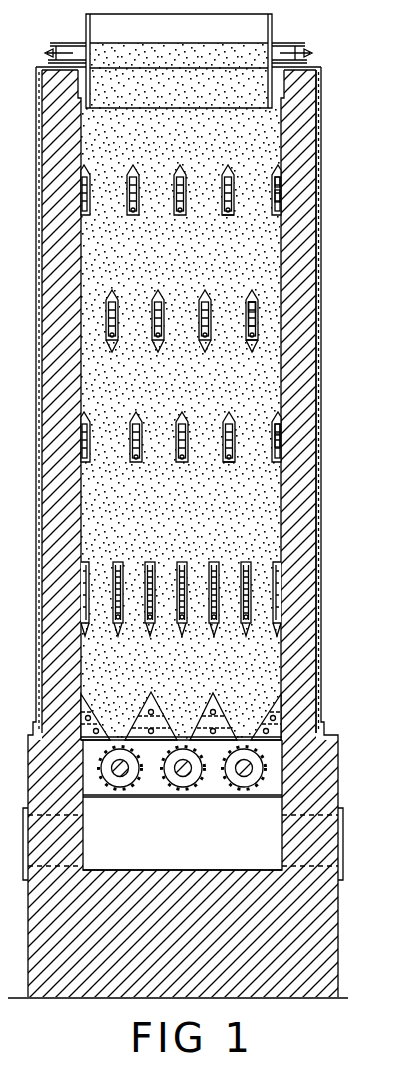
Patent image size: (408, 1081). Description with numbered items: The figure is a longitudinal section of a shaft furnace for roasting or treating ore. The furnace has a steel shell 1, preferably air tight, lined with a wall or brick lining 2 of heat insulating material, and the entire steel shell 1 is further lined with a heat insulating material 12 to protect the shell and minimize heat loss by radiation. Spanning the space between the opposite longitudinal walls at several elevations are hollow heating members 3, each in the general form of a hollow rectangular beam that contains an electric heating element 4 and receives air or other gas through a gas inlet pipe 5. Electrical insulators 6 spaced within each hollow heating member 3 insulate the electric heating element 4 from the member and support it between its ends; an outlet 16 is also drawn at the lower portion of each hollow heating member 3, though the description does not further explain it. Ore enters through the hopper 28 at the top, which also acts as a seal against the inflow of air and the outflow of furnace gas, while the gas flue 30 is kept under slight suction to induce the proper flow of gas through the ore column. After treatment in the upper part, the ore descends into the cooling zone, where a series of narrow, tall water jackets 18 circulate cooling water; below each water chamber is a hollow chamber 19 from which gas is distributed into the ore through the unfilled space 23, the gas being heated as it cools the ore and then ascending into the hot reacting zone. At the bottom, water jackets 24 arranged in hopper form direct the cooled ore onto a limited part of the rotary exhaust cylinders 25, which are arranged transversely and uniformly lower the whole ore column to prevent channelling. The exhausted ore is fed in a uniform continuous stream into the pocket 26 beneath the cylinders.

The steel shell 1 is at (323, 497).
The brick lining 2 is at (295, 523).
The hollow heating member 3 is at (232, 172).
The electric heating element 4 is at (285, 195).
The gas inlet pipe 5 is at (276, 177).
The electrical insulators 6 is at (256, 306).
The heat insulating material 12 is at (325, 545).
The nozzle outlet 16 is at (230, 222).
The water jackets 18 is at (248, 590).
The hollow chamber 19 is at (258, 617).
The unfilled space 23 is at (245, 630).
The water jackets 24 is at (218, 704).
The rotary exhaust cylinders 25 is at (270, 768).
The pocket 26 is at (245, 838).
The hopper 28 is at (275, 34).
The gas flue 30 is at (306, 56).